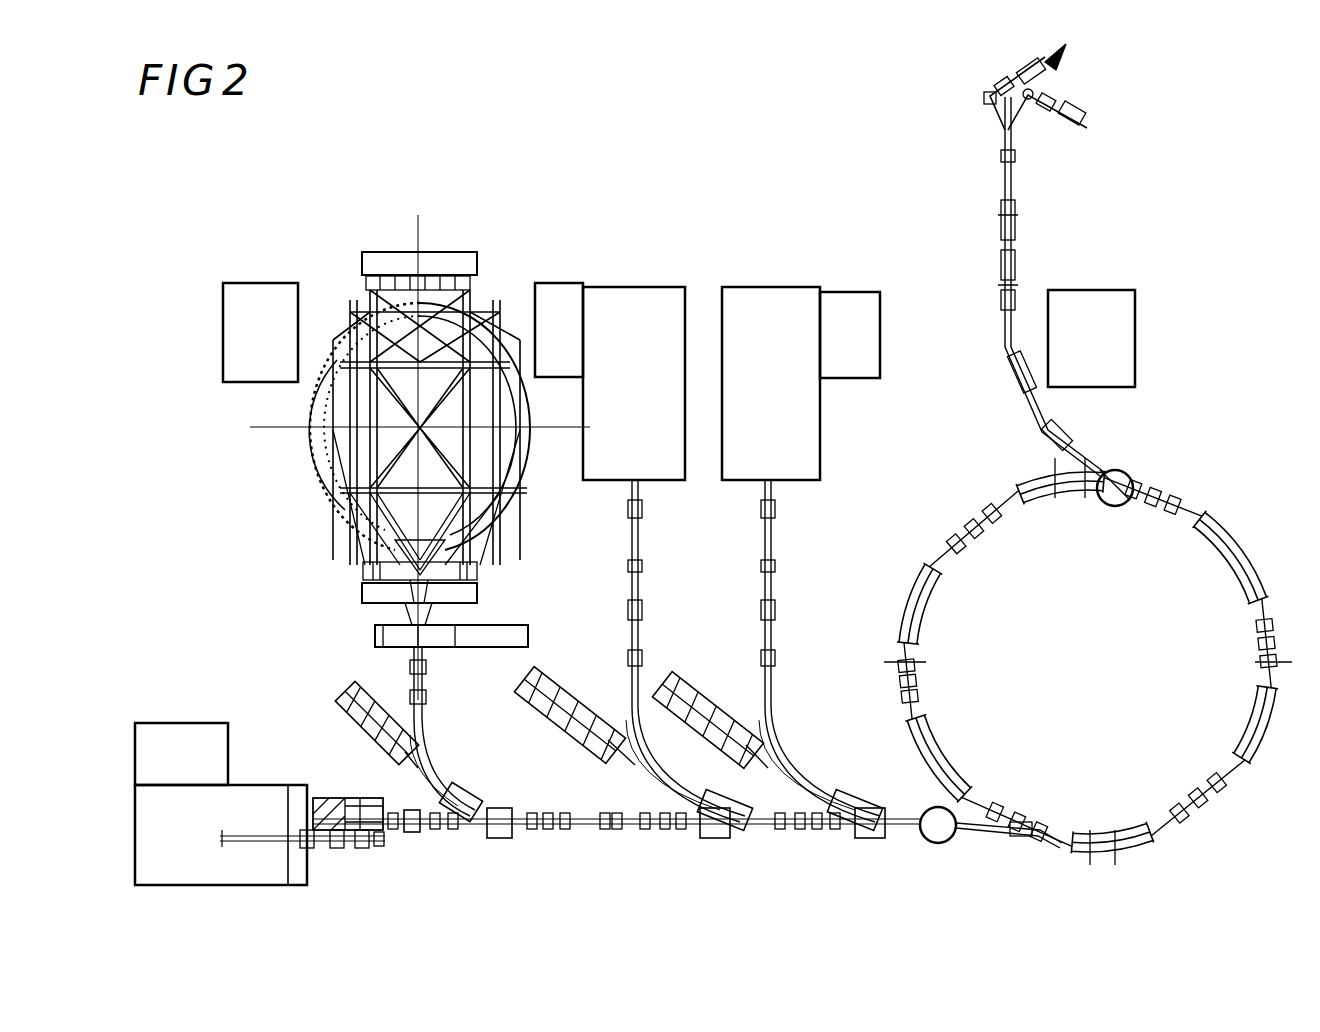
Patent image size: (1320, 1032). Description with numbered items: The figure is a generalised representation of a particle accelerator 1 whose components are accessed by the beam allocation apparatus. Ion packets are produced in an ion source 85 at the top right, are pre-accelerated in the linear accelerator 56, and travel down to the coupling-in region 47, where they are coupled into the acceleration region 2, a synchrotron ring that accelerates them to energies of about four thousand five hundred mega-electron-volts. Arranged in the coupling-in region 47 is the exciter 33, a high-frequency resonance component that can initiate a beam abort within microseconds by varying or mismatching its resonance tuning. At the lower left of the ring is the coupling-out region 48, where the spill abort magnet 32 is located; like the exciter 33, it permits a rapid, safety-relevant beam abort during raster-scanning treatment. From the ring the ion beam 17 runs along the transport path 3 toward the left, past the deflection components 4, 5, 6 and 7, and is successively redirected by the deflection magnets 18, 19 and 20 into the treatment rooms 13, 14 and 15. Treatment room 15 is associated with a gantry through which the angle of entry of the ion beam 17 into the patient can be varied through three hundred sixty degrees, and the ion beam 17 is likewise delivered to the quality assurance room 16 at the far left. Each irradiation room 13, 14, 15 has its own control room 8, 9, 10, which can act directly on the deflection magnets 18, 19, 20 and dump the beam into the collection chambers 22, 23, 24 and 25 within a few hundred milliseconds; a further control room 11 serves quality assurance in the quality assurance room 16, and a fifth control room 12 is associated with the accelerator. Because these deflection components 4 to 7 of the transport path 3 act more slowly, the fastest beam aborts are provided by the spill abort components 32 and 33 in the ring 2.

The particle accelerator 1 is at (1188, 193).
The acceleration region 2 is at (1200, 522).
The transport path 3 is at (455, 835).
The deflection component 4 is at (868, 838).
The deflection component 5 is at (712, 836).
The deflection component 6 is at (498, 836).
The deflection component 7 is at (415, 836).
The control room 8 is at (855, 300).
The control room 9 is at (568, 292).
The control room 10 is at (270, 296).
The control room 11 is at (212, 738).
The control room 12 is at (1112, 298).
The treatment room 13 is at (772, 288).
The treatment room 14 is at (638, 288).
The treatment room 15 is at (460, 254).
The quality assurance room 16 is at (237, 802).
The ion beam 17 is at (430, 650).
The deflection magnet 18 is at (850, 812).
The deflection magnet 19 is at (716, 812).
The deflection magnet 20 is at (492, 814).
The collection chamber 22 is at (695, 695).
The collection chamber 23 is at (562, 695).
The collection chamber 24 is at (375, 712).
The collection chamber 25 is at (328, 800).
The spill abort magnet 32 is at (952, 833).
The exciter 33 is at (1133, 490).
The coupling-in region 47 is at (1122, 470).
The coupling-out region 48 is at (1035, 830).
The linear accelerator 56 is at (1015, 228).
The ion source 85 is at (1088, 120).